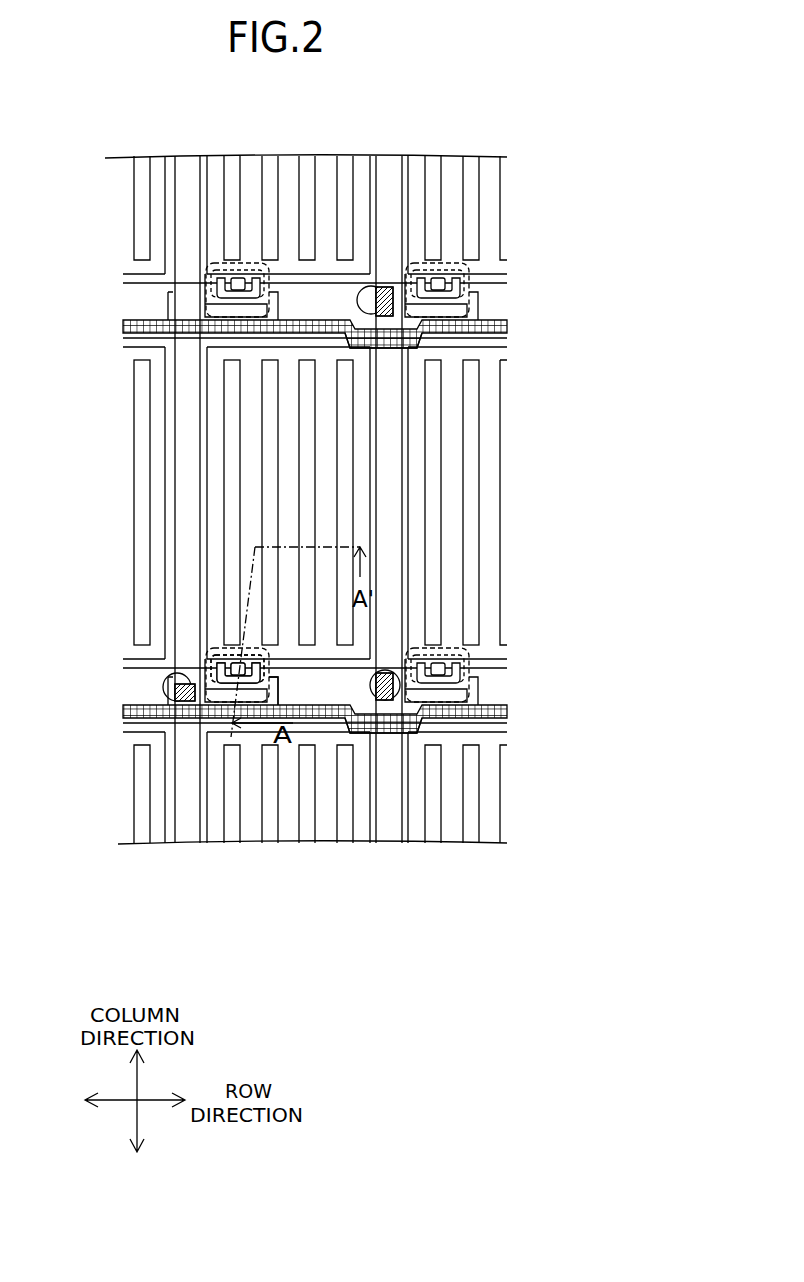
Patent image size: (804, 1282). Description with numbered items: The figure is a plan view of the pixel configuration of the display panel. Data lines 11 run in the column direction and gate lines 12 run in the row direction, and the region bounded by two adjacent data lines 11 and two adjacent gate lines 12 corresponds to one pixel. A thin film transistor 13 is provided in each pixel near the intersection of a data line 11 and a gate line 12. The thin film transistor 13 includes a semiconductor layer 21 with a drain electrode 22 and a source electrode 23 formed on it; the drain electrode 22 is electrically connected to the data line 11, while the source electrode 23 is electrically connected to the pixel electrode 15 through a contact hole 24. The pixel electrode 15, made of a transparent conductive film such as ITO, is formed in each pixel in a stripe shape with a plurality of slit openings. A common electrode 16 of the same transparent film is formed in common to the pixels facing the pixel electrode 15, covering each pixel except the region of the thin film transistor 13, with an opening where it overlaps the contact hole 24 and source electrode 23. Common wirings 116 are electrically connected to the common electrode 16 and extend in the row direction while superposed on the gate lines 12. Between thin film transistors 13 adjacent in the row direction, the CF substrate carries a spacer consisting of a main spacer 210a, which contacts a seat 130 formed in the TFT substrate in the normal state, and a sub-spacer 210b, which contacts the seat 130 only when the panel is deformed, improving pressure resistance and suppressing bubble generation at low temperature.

The data line 11 is at (413, 908).
The gate line 12 is at (133, 686).
The thin film transistor 13 is at (154, 704).
The pixel electrode 15 is at (215, 568).
The common electrode 16 is at (210, 652).
The semiconductor layer 21 is at (276, 680).
The drain electrode 22 is at (263, 697).
The source electrode 23 is at (210, 662).
The contact hole 24 is at (237, 663).
The common wiring 116 is at (543, 708).
The seat 130 is at (378, 292).
The main spacer 210a is at (543, 832).
The sub-spacer 210b is at (176, 701).